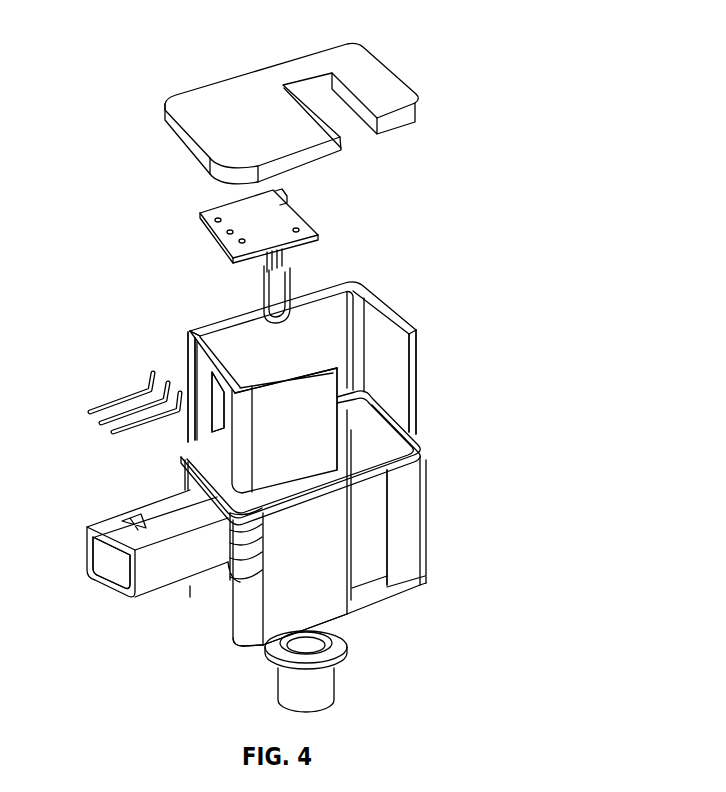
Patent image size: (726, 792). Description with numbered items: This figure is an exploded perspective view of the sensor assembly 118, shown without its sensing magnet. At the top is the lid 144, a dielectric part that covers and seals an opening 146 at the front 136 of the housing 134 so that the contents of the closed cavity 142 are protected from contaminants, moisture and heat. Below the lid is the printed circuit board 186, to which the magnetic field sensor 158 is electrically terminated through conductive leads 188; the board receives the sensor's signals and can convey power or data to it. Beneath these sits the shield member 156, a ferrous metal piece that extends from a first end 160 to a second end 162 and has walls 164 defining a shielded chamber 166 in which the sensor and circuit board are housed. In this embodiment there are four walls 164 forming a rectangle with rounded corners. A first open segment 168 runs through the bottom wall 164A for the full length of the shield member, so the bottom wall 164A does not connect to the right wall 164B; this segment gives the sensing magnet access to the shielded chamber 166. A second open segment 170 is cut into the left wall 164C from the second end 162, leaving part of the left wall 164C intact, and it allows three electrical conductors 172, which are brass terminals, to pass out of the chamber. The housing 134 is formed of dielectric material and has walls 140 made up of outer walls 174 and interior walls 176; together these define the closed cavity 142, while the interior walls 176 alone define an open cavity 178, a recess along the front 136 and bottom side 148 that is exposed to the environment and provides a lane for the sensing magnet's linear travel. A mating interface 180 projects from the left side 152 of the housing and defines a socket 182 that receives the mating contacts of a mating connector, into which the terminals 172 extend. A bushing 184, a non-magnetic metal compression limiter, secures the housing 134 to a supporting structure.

The sensor assembly 118 is at (470, 56).
The lid 144 is at (238, 100).
The printed circuit board 186 is at (240, 220).
The conductive leads 188 is at (283, 268).
The magnetic field sensor 158 is at (265, 300).
The shield member 156 is at (383, 302).
The first end 160 is at (188, 328).
The shielded chamber 166 is at (230, 356).
The walls 164 is at (323, 313).
The bottom wall 164A is at (307, 388).
The right wall 164B is at (390, 355).
The left wall 164C is at (208, 370).
The second open segment 170 is at (210, 413).
The electrical conductors 172 is at (127, 400).
The front 136 is at (425, 441).
The opening 146 is at (199, 466).
The closed cavity 142 is at (225, 491).
The housing 134 is at (426, 486).
The first open segment 168 is at (373, 492).
The interior walls 176 is at (388, 533).
The open cavity 178 is at (375, 570).
The bottom side 148 is at (317, 590).
The outer walls 174 is at (225, 590).
The second end 162 is at (267, 497).
The walls 140 is at (280, 602).
The mating interface 180 is at (117, 525).
The socket 182 is at (120, 572).
The left side 152 is at (222, 603).
The bushing 184 is at (323, 690).